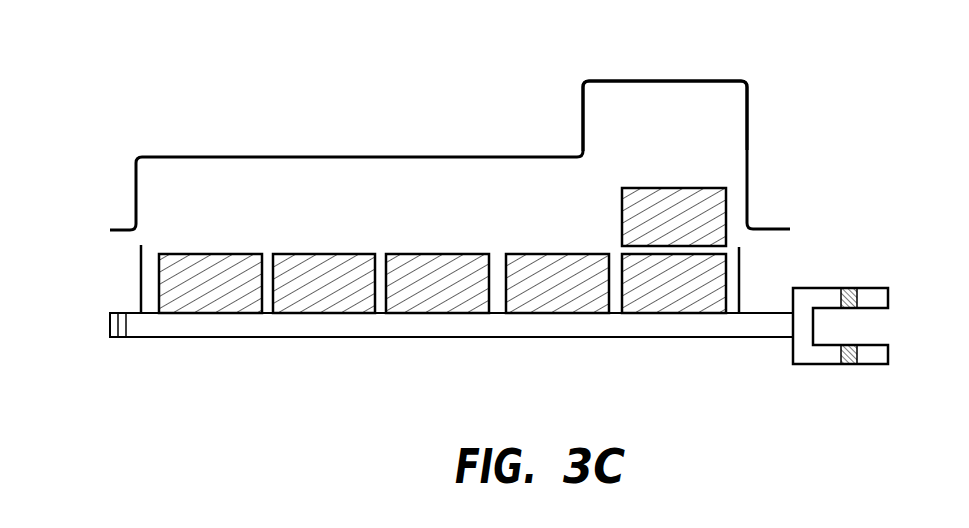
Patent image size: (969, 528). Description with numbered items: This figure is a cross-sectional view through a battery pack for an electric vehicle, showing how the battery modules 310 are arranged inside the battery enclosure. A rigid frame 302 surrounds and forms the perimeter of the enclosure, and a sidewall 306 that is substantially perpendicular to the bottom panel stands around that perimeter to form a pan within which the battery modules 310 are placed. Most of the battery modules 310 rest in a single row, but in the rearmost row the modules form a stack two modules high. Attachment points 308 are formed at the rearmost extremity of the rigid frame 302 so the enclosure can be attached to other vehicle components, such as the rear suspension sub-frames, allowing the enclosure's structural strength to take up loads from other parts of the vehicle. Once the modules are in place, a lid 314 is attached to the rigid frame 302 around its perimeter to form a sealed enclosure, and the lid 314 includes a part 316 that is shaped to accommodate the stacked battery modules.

The rigid frame 302 is at (436, 325).
The sidewall 306 is at (140, 283).
The attachment points 308 is at (835, 365).
The battery modules 310 is at (322, 251).
The lid 314 is at (396, 155).
The part 316 is at (656, 79).